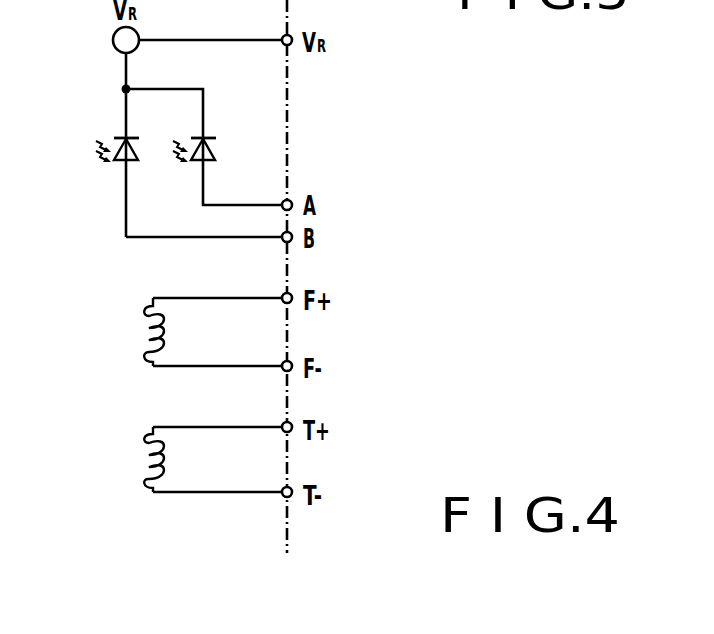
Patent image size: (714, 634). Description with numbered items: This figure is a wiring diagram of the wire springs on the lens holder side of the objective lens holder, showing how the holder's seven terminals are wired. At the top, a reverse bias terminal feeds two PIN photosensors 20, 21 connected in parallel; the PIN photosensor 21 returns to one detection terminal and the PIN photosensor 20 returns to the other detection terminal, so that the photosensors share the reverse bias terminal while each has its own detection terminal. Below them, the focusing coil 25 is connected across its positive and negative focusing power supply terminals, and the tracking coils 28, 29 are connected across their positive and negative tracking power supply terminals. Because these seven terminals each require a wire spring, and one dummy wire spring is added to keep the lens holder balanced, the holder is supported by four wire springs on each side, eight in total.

The PIN photosensor 20 is at (113, 167).
The PIN photosensor 21 is at (190, 167).
The focusing coil 25 is at (141, 336).
The tracking coil 28 is at (163, 459).
The tracking coil 29 is at (140, 462).